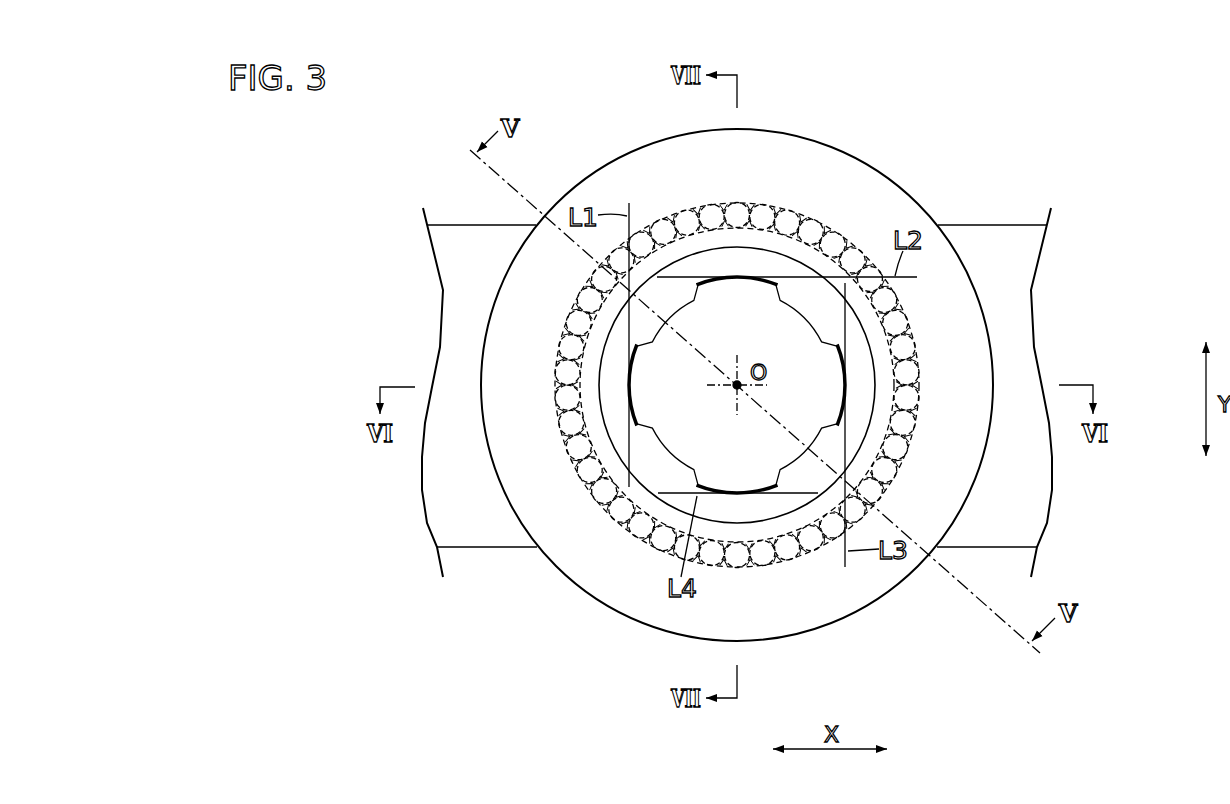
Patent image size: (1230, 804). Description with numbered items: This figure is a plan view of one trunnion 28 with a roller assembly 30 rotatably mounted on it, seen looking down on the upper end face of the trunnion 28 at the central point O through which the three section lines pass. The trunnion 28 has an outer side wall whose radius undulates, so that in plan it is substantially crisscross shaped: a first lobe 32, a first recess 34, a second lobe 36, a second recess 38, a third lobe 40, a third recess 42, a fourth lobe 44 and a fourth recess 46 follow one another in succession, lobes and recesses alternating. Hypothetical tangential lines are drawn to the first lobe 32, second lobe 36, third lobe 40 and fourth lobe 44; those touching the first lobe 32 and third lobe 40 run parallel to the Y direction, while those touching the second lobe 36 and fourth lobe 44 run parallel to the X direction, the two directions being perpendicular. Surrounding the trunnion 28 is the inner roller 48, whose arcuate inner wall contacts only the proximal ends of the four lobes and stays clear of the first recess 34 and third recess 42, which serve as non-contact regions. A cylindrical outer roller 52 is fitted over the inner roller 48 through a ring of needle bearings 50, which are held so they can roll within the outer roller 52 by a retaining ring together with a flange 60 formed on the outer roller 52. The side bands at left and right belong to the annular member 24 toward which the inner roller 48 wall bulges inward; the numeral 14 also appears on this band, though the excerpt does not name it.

The housing 14 is at (1010, 554).
The annular member 24 is at (990, 232).
The trunnion 28 is at (824, 362).
The roller assembly 30 is at (819, 139).
The first lobe 32 is at (645, 383).
The first recess 34 is at (679, 305).
The second lobe 36 is at (730, 292).
The second recess 38 is at (795, 306).
The third lobe 40 is at (835, 386).
The third recess 42 is at (802, 464).
The fourth lobe 44 is at (738, 482).
The fourth recess 46 is at (674, 467).
The inner roller 48 is at (662, 478).
The needle bearings 50 is at (835, 218).
The outer roller 52 is at (605, 583).
The flange 60 is at (882, 431).